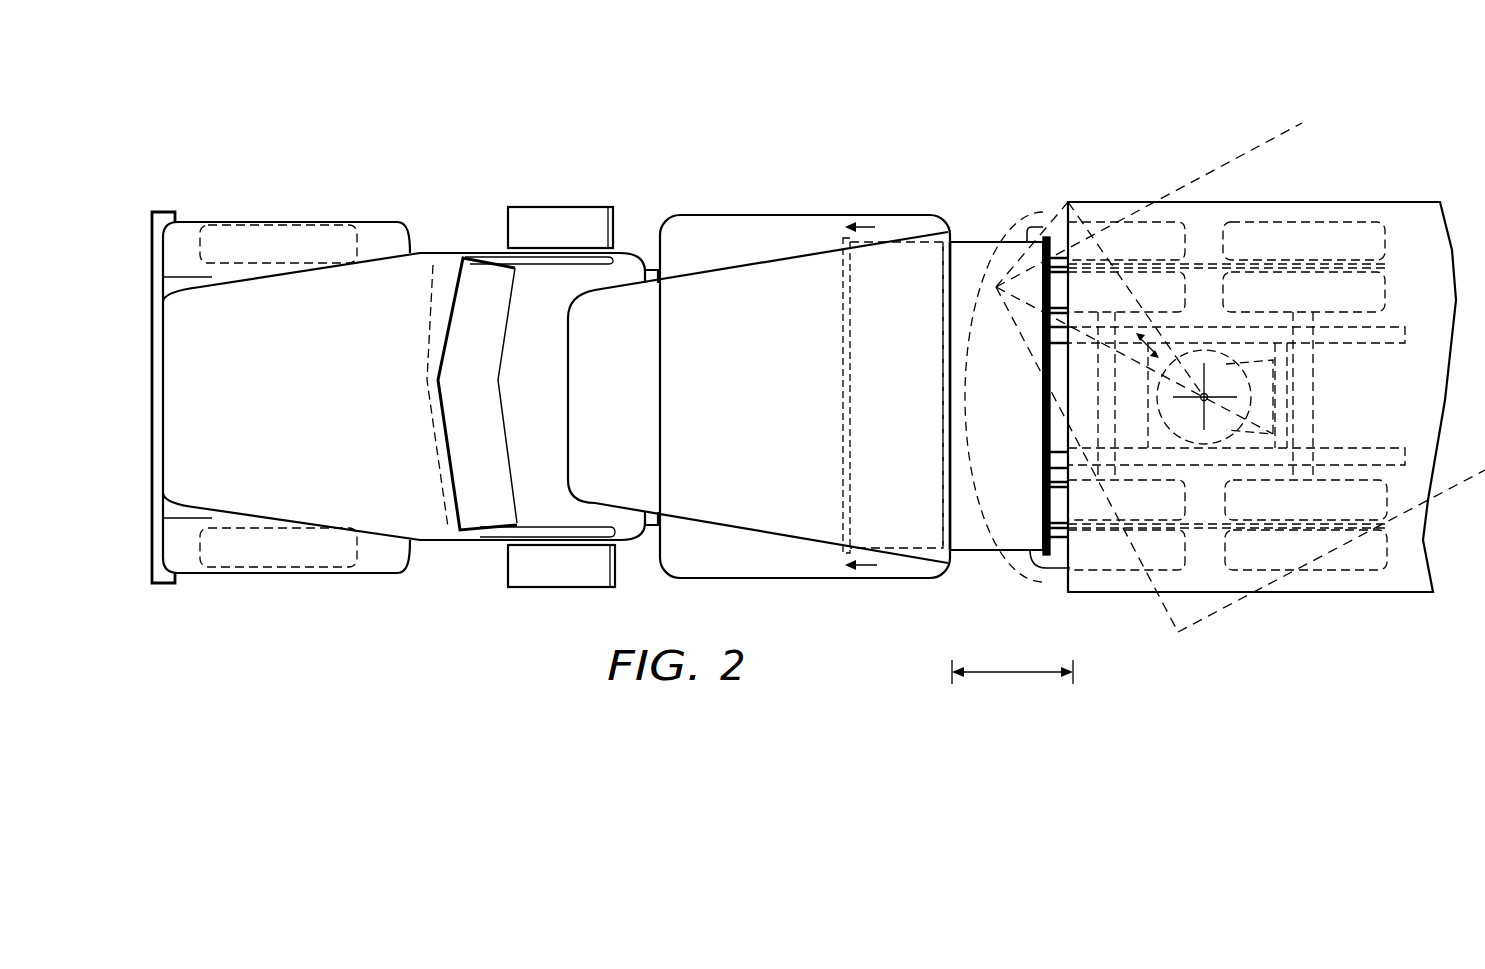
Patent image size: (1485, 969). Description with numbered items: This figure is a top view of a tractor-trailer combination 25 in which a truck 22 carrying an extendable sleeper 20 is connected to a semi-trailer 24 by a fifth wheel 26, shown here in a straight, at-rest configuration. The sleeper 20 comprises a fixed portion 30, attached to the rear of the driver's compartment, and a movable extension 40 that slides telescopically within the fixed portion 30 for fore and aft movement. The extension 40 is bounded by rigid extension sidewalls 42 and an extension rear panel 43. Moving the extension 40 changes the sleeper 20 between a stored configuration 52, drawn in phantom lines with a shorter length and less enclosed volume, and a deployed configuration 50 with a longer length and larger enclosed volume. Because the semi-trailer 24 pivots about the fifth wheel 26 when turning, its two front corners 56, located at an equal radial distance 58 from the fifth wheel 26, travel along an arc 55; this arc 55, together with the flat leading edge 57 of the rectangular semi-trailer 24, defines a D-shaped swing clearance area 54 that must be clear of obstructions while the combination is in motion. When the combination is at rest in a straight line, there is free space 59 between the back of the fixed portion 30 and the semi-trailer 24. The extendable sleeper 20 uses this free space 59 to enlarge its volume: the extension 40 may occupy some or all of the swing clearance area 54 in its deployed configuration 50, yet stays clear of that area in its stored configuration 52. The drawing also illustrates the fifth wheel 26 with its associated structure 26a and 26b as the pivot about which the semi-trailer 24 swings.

The extendable sleeper 20 is at (745, 206).
The truck 22 is at (395, 114).
The semi-trailer 24 is at (1262, 397).
The tractor-trailer combination 25 is at (1010, 361).
The fifth wheel 26 is at (1277, 394).
The trailer frame rails 26a is at (1222, 468).
The kingpin plate 26b is at (1213, 408).
The fixed portion 30 is at (717, 561).
The movable extension 40 is at (1025, 429).
The extension sidewalls 42 is at (1028, 460).
The extension rear panel 43 is at (1038, 222).
The deployed configuration 50 is at (983, 241).
The stored configuration 52 is at (840, 395).
The swing clearance area 54 is at (1054, 564).
The arc 55 is at (1012, 535).
The front corners 56 is at (1068, 199).
The flat leading edge 57 is at (1080, 393).
The radial distance 58 is at (1140, 298).
The free space 59 is at (1008, 674).